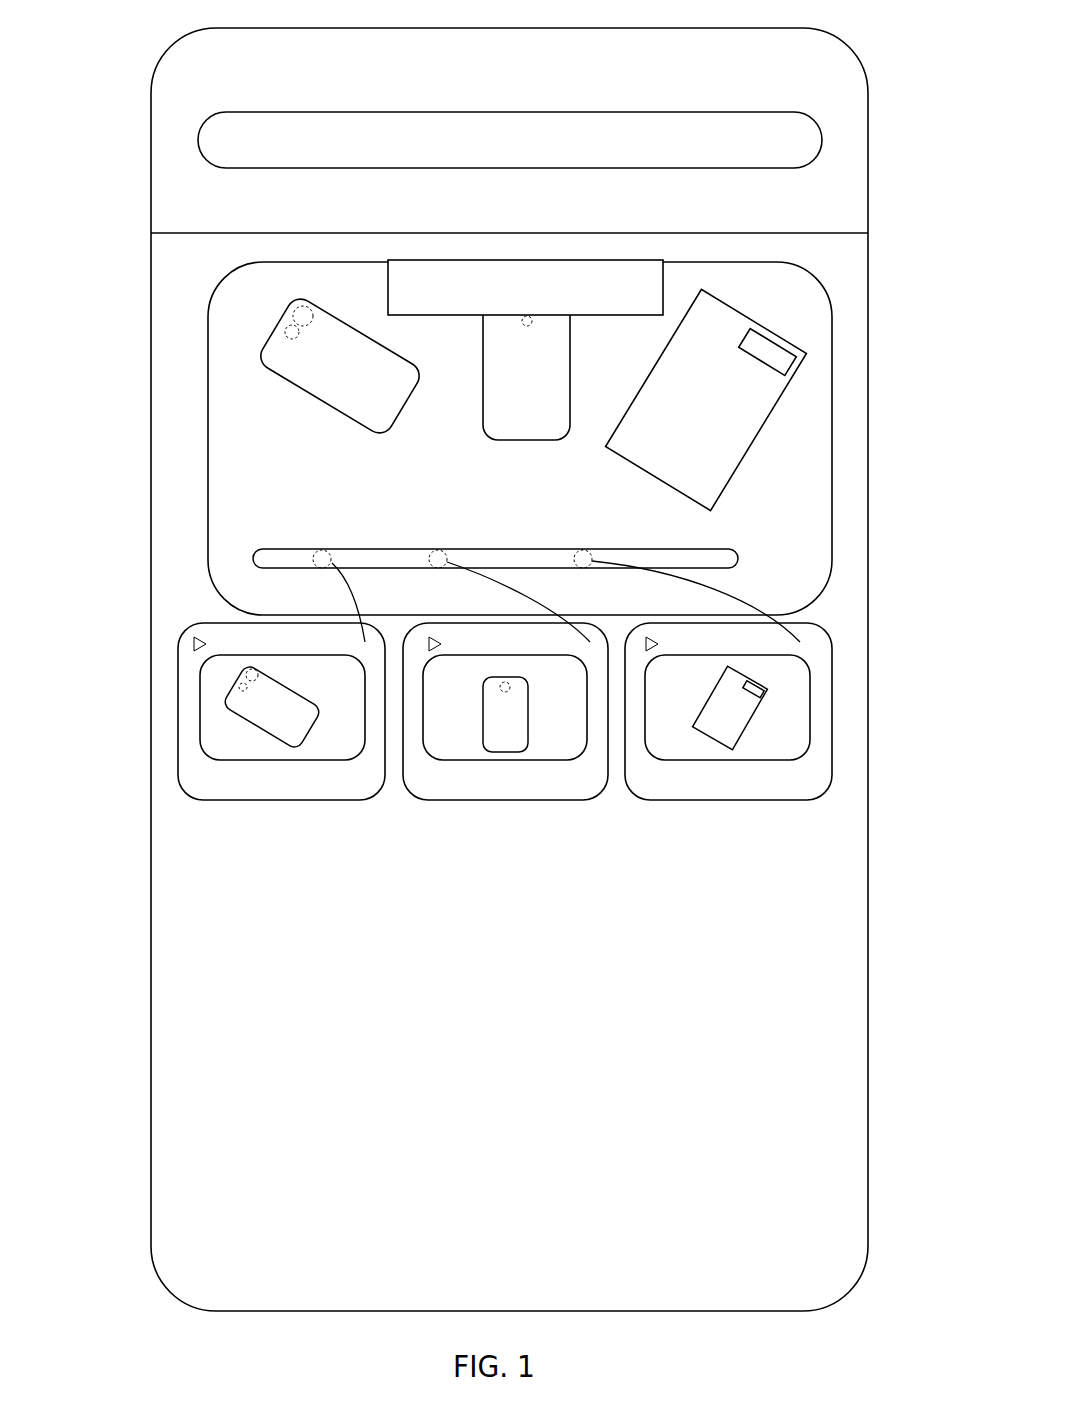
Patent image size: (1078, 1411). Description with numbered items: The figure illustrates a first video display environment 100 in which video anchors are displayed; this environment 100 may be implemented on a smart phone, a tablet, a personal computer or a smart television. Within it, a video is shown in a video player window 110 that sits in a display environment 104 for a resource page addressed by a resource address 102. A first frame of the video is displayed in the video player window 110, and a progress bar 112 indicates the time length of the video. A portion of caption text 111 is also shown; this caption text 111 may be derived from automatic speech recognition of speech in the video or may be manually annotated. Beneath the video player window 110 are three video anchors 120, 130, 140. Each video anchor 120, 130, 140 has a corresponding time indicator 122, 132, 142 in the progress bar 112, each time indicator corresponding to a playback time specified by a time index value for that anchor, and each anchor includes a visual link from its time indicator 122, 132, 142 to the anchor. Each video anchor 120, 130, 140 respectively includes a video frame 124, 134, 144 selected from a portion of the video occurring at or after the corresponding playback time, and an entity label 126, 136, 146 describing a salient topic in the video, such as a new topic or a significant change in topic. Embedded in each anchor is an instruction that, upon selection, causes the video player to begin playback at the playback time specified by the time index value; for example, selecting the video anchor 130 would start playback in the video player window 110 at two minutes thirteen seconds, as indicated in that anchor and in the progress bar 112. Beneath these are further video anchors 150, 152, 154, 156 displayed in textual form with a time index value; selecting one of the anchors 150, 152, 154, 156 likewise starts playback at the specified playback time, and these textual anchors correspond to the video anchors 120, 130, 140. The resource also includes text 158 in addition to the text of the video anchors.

The video display environment 100 is at (116, 63).
The resource address 102 is at (820, 132).
The display environment 104 is at (869, 272).
The video player window 110 is at (212, 334).
The caption text 111 is at (796, 272).
The progress bar 112 is at (253, 560).
The video anchor 120 is at (178, 727).
The time indicator 122 is at (318, 552).
The video frame 124 is at (200, 754).
The entity label 126 is at (225, 780).
The video anchor 130 is at (528, 802).
The time indicator 132 is at (432, 552).
The video frame 134 is at (587, 748).
The entity label 136 is at (548, 778).
The video anchor 140 is at (832, 683).
The time indicator 142 is at (577, 552).
The video frame 144 is at (812, 745).
The entity label 146 is at (772, 787).
The video anchor 150 is at (200, 952).
The video anchor 152 is at (200, 1016).
The video anchor 154 is at (200, 988).
The video anchor 156 is at (200, 1050).
The text 158 is at (636, 910).